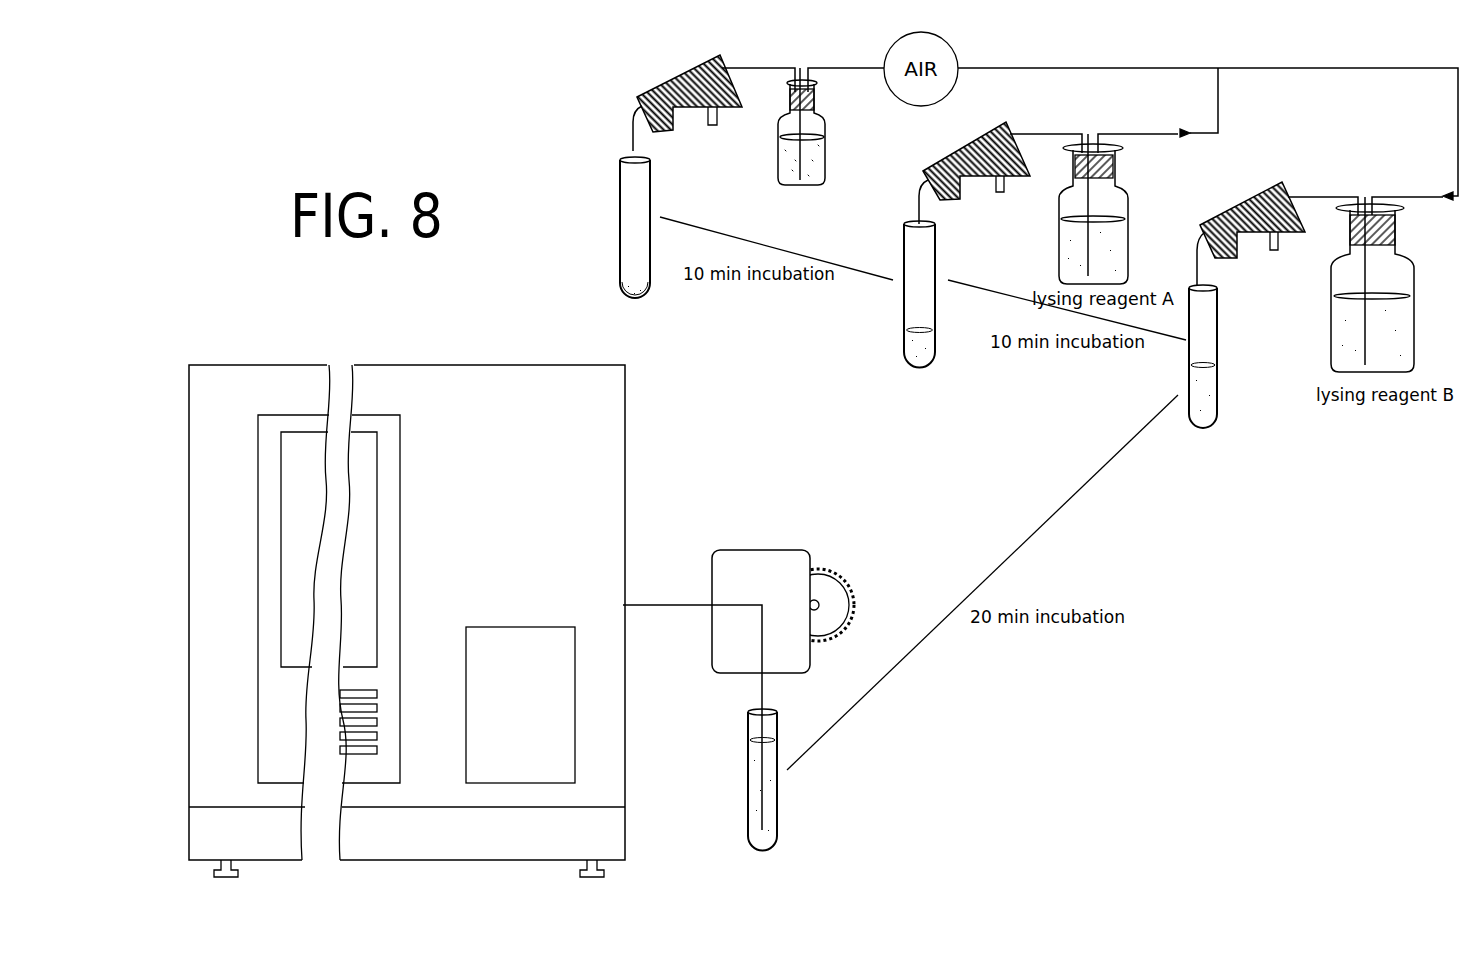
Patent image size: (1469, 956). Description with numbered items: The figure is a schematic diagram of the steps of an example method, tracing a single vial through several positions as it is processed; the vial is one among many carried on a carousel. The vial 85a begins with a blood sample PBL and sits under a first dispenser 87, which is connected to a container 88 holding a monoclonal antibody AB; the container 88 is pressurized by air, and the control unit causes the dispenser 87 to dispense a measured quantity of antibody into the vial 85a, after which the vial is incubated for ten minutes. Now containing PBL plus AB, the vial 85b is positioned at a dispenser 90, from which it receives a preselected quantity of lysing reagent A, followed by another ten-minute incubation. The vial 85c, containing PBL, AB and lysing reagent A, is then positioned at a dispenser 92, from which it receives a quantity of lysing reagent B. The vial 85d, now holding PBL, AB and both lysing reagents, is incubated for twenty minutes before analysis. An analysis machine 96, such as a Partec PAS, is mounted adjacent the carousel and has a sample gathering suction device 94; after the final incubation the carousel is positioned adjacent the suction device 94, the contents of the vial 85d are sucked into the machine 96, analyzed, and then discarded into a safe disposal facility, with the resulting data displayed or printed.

The vial 85a is at (618, 237).
The vial 85b is at (905, 290).
The vial 85c is at (1186, 348).
The vial 85d is at (780, 817).
The first dispenser 87 is at (637, 95).
The container 88 is at (778, 135).
The dispenser 90 is at (942, 143).
The dispenser 92 is at (1232, 208).
The sample gathering suction device 94 is at (780, 538).
The analysis machine 96 is at (648, 434).